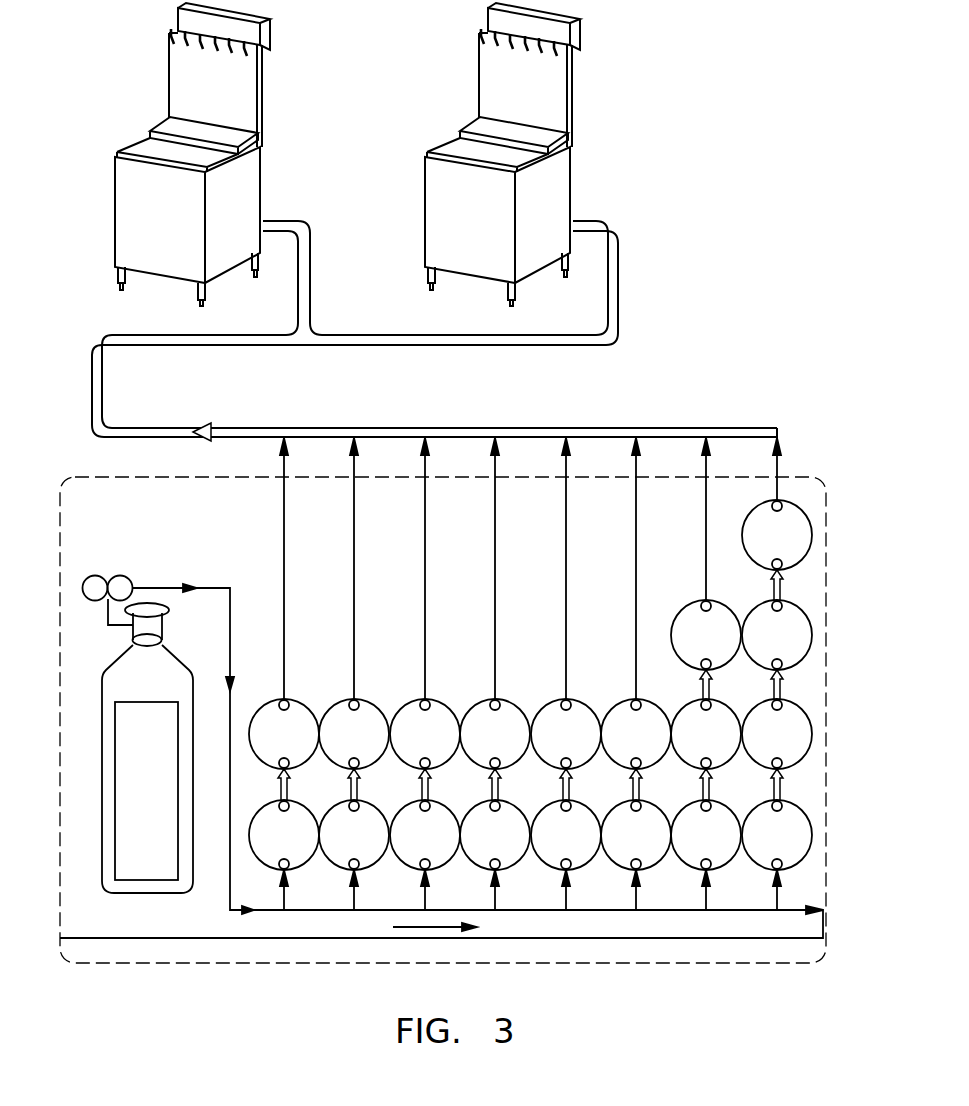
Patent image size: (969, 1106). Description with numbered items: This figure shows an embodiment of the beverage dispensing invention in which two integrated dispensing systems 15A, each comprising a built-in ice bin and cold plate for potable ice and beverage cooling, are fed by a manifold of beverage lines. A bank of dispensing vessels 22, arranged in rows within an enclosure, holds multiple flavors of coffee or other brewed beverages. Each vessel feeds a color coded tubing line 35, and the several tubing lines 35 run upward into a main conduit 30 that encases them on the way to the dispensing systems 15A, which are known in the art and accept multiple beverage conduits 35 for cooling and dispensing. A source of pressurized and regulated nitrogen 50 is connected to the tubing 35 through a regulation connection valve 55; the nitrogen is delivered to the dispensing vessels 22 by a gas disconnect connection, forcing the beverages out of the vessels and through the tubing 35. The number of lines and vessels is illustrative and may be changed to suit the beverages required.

The integrated dispensing system 15A is at (263, 181).
The dispensing vessel 22 is at (747, 519).
The main conduit 30 is at (230, 427).
The color coded tubing 35 is at (284, 531).
The source of pressurized and regulated nitrogen 50 is at (167, 645).
The regulation connection valve 55 is at (121, 576).